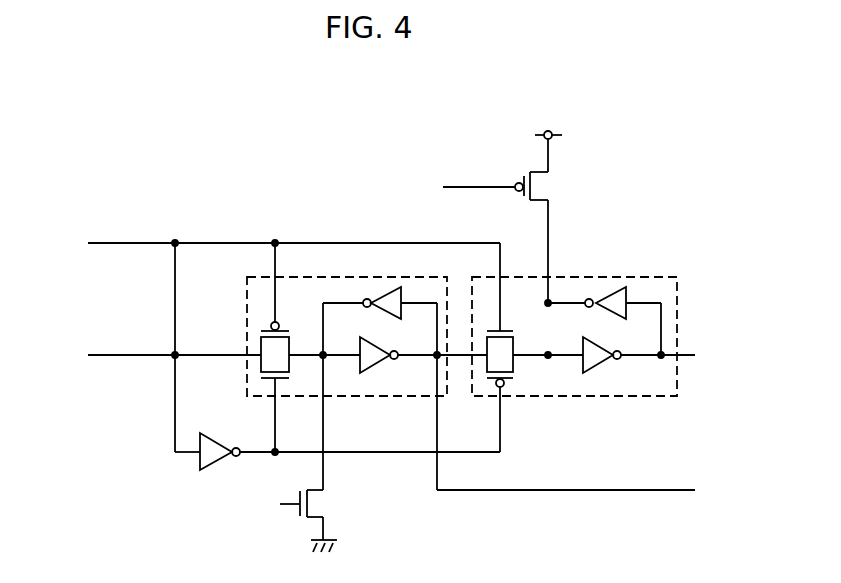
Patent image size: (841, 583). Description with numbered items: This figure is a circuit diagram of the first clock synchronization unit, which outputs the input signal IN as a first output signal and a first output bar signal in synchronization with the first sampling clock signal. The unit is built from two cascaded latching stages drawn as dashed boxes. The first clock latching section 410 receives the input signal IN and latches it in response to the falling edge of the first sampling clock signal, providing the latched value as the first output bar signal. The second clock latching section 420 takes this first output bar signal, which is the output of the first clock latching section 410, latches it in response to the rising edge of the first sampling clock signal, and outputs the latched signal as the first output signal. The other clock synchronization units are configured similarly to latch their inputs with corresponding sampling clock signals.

The first clock latching section 410 is at (398, 277).
The second clock latching section 420 is at (625, 277).